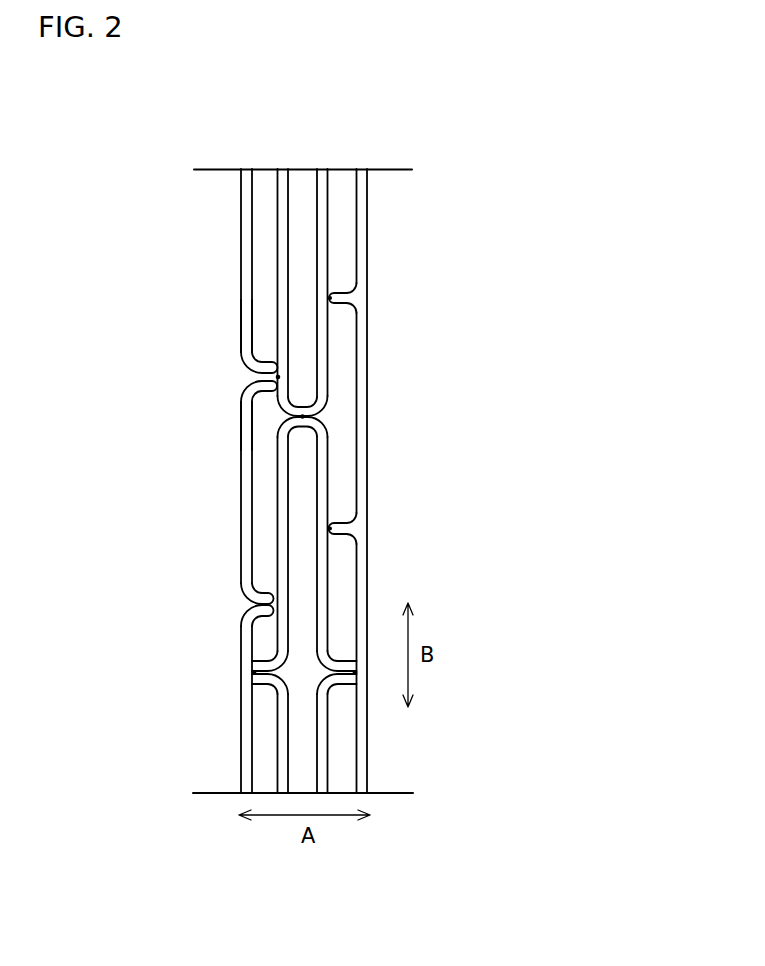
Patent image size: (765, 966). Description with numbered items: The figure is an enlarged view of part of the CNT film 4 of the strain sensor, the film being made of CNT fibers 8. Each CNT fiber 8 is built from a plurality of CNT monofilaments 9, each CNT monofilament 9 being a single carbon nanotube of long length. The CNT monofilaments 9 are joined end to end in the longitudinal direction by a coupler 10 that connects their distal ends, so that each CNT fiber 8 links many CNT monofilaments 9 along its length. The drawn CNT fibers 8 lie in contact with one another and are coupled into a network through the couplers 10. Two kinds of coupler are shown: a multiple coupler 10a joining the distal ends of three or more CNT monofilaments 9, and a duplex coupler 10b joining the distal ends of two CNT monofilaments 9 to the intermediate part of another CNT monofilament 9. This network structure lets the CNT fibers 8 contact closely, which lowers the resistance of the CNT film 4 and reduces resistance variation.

The CNT film 4 is at (418, 143).
The CNT fiber 8 is at (173, 325).
The CNT monofilament 9 is at (241, 327).
The coupler 10 is at (250, 604).
The multiple coupler 10a is at (322, 411).
The duplex coupler 10b is at (357, 529).